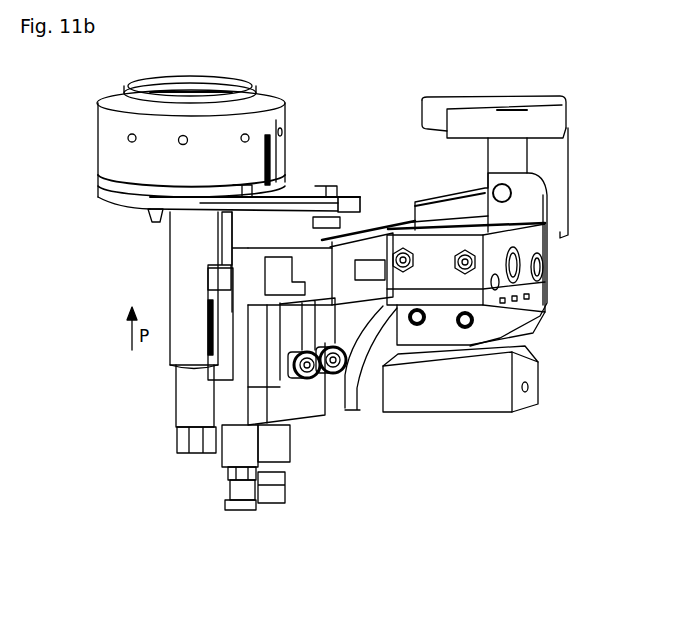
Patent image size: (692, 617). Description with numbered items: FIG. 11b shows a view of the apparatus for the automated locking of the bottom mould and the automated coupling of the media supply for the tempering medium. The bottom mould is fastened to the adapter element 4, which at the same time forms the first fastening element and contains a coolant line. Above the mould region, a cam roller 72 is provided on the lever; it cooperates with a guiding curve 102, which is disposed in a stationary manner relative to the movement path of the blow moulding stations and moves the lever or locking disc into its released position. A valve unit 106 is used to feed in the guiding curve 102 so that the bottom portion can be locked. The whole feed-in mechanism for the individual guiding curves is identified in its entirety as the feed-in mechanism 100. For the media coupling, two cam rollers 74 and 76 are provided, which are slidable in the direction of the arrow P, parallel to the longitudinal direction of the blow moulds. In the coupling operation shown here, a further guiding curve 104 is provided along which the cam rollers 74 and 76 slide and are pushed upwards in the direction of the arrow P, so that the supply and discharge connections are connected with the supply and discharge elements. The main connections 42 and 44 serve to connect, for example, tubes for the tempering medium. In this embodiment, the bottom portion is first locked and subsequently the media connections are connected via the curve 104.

The adapter element 4 is at (247, 134).
The cam roller 72 is at (365, 227).
The valve unit 106 is at (428, 237).
The feed-in mechanism 100 is at (504, 306).
The guiding curve 102 is at (262, 230).
The cam roller 74 is at (285, 372).
The cam roller 76 is at (323, 380).
The guiding curve 104 is at (362, 410).
The main connection 44 is at (240, 507).
The main connection 42 is at (278, 498).